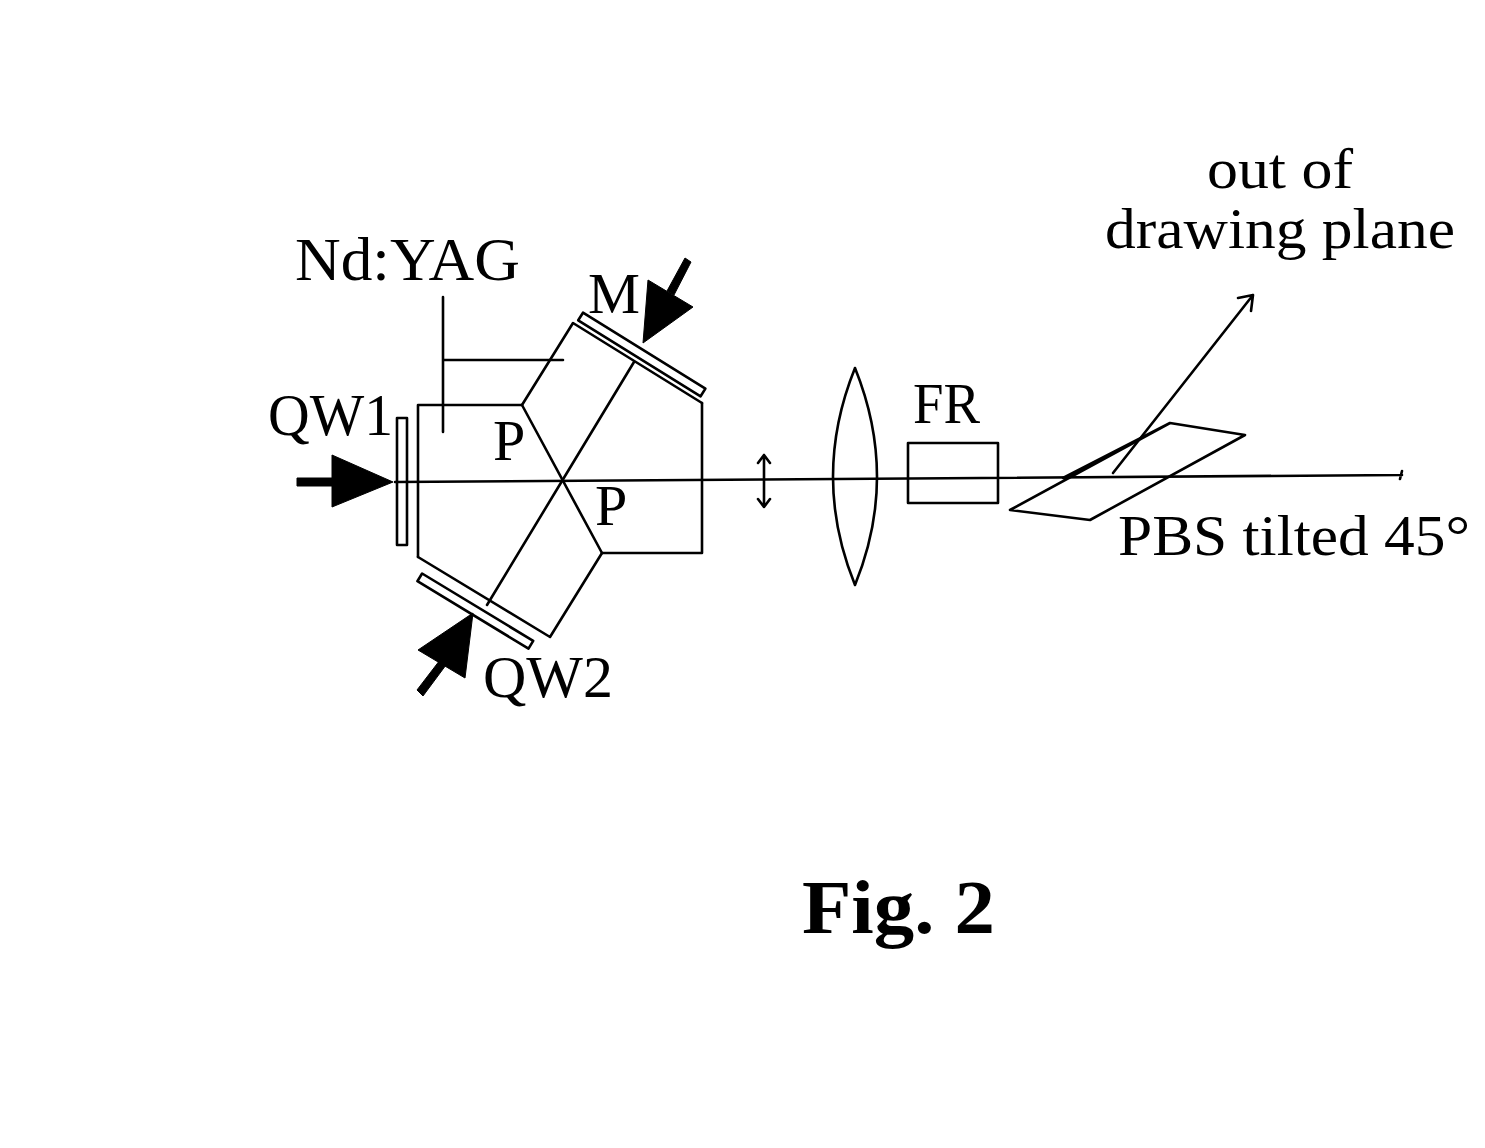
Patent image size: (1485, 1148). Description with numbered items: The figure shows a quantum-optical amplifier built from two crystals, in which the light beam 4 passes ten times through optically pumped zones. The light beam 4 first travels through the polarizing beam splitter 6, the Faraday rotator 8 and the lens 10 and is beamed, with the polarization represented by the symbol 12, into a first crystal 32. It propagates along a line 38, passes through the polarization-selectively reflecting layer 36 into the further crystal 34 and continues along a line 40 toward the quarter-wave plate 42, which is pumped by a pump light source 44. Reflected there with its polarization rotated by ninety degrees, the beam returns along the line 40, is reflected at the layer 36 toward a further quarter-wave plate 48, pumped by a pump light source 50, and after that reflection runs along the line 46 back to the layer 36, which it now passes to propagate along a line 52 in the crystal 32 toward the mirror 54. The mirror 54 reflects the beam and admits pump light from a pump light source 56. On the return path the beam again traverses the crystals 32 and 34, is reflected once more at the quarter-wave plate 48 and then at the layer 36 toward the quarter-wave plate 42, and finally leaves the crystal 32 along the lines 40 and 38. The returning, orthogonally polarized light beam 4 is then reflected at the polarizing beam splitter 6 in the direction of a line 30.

The light beam 4 is at (1320, 473).
The polarizing beam splitter 6 is at (1193, 443).
The Faraday rotator 8 is at (980, 462).
The lens 10 is at (852, 413).
The symbol for polarization 12 is at (763, 453).
The line 30 is at (1226, 332).
The first crystal 32 is at (683, 538).
The further crystal 34 is at (550, 603).
The polarization-selectively reflecting layer 36 is at (522, 405).
The line 38 is at (617, 479).
The line 40 is at (433, 483).
The quarter-wave plate 42 is at (403, 543).
The pump light source 44 is at (297, 487).
The line 46 is at (497, 572).
The further quarter-wave plate 48 is at (440, 585).
The pump light source 50 is at (420, 693).
The line 52 is at (576, 460).
The mirror 54 is at (685, 378).
The pump light source 56 is at (688, 260).